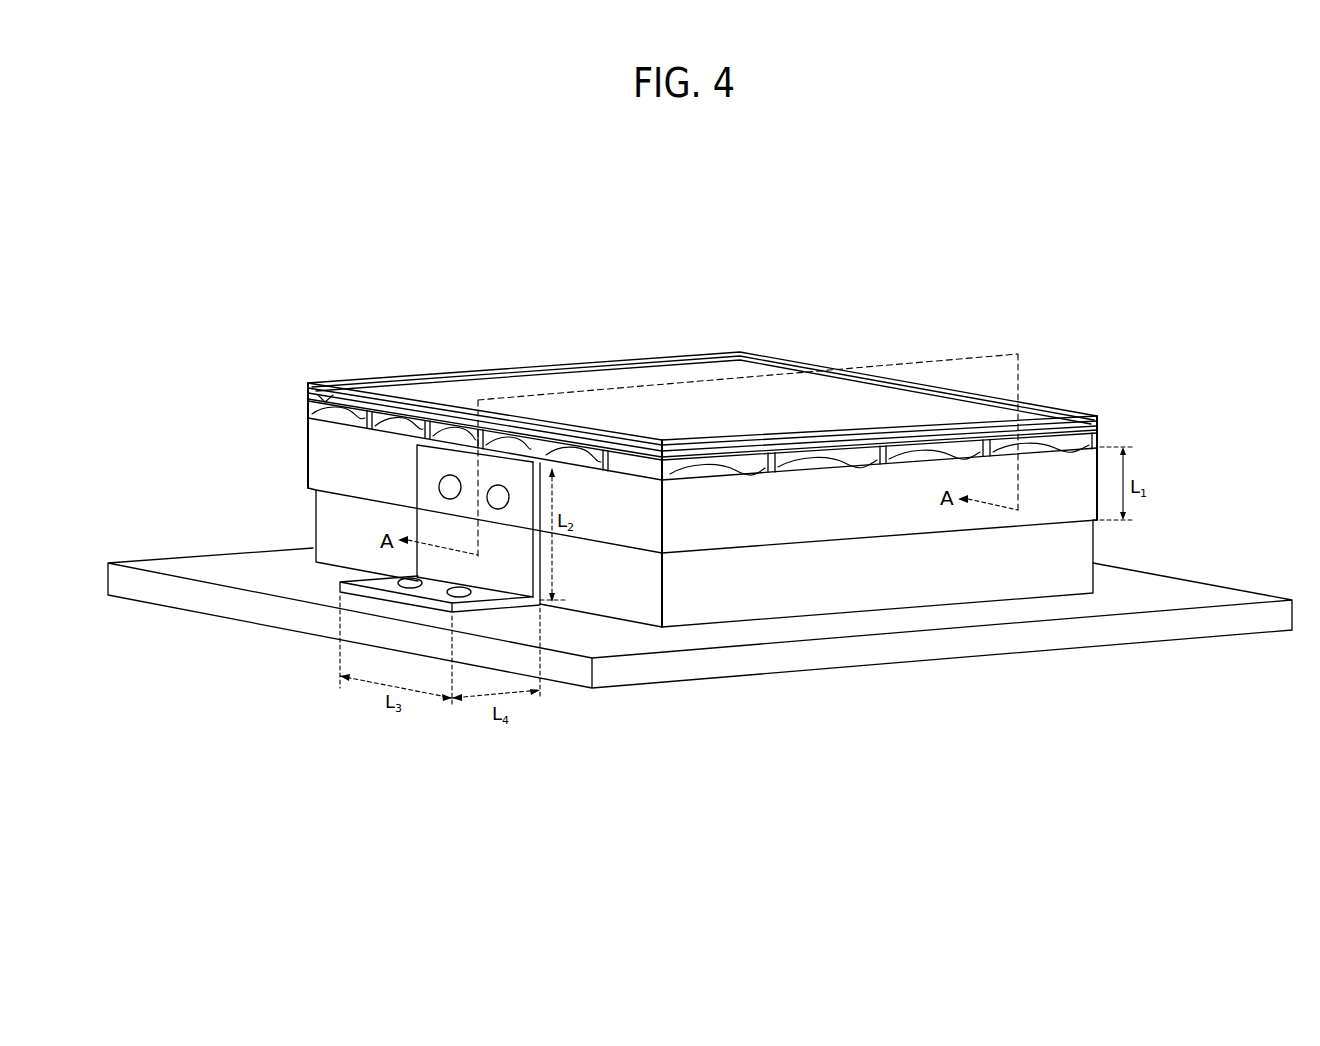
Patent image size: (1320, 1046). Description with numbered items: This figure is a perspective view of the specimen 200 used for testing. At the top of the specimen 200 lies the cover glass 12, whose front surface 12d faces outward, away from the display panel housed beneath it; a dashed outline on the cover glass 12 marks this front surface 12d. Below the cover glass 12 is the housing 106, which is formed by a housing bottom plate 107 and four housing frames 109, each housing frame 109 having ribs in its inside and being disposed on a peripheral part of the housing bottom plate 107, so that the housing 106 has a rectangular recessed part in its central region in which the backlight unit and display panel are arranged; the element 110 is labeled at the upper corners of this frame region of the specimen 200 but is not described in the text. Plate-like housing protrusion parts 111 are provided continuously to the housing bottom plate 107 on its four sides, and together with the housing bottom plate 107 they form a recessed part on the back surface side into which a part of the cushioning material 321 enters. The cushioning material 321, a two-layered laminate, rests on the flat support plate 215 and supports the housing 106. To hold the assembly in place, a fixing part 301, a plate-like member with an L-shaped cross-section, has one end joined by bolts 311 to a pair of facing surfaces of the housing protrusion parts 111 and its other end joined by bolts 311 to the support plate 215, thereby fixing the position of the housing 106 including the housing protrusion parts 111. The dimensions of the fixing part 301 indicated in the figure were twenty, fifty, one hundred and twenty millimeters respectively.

The specimen 200 is at (400, 361).
The cover glass 12 is at (807, 410).
The front surface 12d is at (737, 405).
The frame 110 is at (322, 392).
The housing bottom plate 107 is at (727, 480).
The housing frame 109 is at (383, 437).
The housing protrusion part 111 is at (1045, 503).
The cushioning material 321 is at (717, 606).
The housing 106 is at (293, 407).
The fixing part 301 is at (417, 490).
The bolt 311 is at (405, 578).
The support plate 215 is at (918, 655).